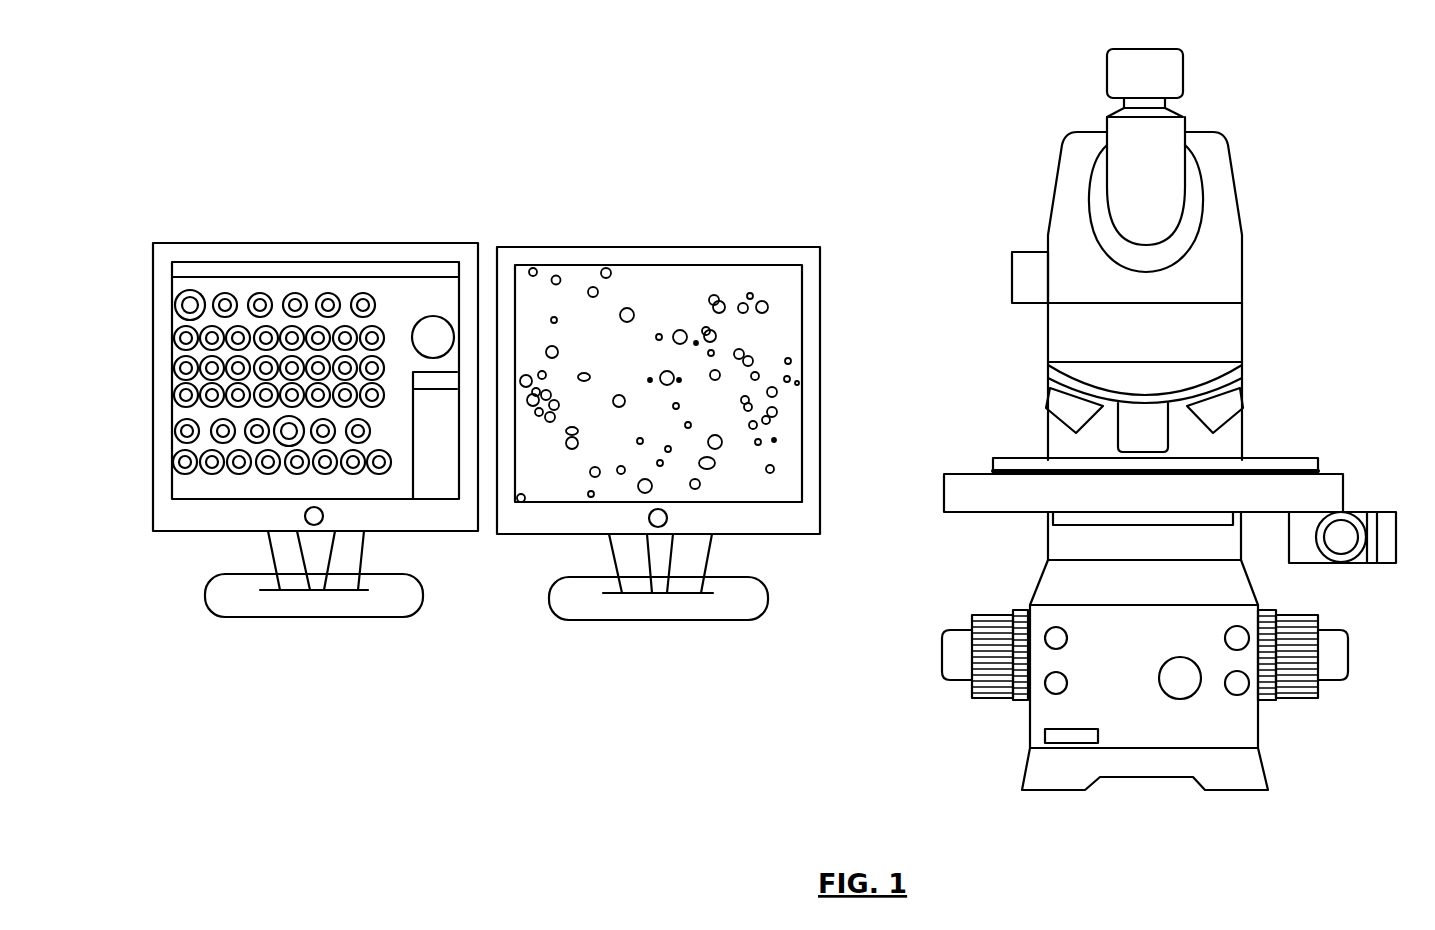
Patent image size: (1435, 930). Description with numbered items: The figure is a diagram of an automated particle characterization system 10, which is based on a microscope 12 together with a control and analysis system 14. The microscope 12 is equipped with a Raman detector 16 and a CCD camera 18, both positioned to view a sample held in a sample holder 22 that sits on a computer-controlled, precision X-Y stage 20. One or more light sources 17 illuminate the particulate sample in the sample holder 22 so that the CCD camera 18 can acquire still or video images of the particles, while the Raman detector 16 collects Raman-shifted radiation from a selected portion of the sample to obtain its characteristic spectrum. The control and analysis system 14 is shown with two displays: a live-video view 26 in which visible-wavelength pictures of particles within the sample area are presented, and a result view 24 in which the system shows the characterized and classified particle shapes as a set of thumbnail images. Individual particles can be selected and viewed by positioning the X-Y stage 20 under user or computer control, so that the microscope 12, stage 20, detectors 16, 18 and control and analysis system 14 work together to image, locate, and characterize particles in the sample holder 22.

The automated particle characterization system 10 is at (190, 776).
The microscope 12 is at (968, 703).
The control and analysis system 14 is at (255, 622).
The Raman detector 16 is at (1183, 75).
The light source 17 is at (1170, 440).
The CCD camera 18 is at (1227, 152).
The X-Y stage 20 is at (944, 490).
The sample holder 22 is at (997, 459).
The result view 24 is at (225, 243).
The live-video view 26 is at (537, 247).